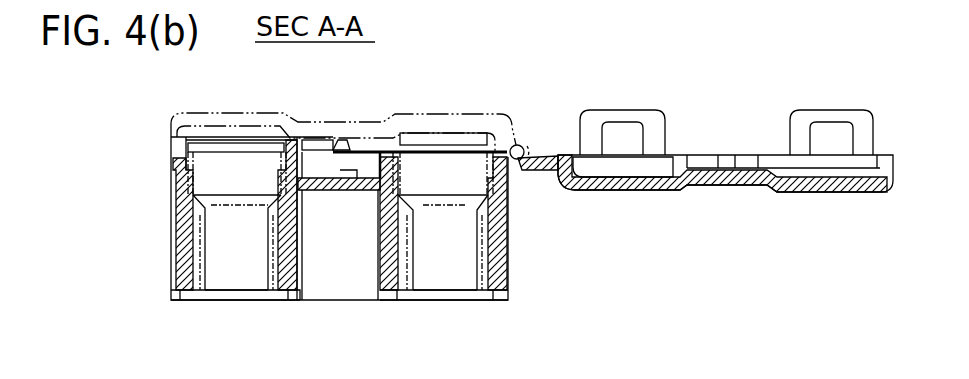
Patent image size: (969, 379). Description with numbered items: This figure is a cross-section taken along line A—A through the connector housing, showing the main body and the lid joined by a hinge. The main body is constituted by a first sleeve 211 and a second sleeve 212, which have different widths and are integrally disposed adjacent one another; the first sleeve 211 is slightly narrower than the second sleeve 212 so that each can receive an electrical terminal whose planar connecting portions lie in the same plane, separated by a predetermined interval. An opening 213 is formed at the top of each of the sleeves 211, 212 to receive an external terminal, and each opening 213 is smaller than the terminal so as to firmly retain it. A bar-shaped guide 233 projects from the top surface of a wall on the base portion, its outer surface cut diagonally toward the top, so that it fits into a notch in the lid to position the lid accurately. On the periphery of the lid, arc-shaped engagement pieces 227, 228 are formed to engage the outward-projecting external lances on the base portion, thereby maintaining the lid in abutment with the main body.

The first sleeve 211 is at (467, 180).
The second sleeve 212 is at (253, 187).
The opening 213 is at (212, 303).
The arc-shaped engagement piece 227 is at (827, 108).
The arc-shaped engagement piece 228 is at (613, 108).
The bar-shaped guide 233 is at (345, 135).